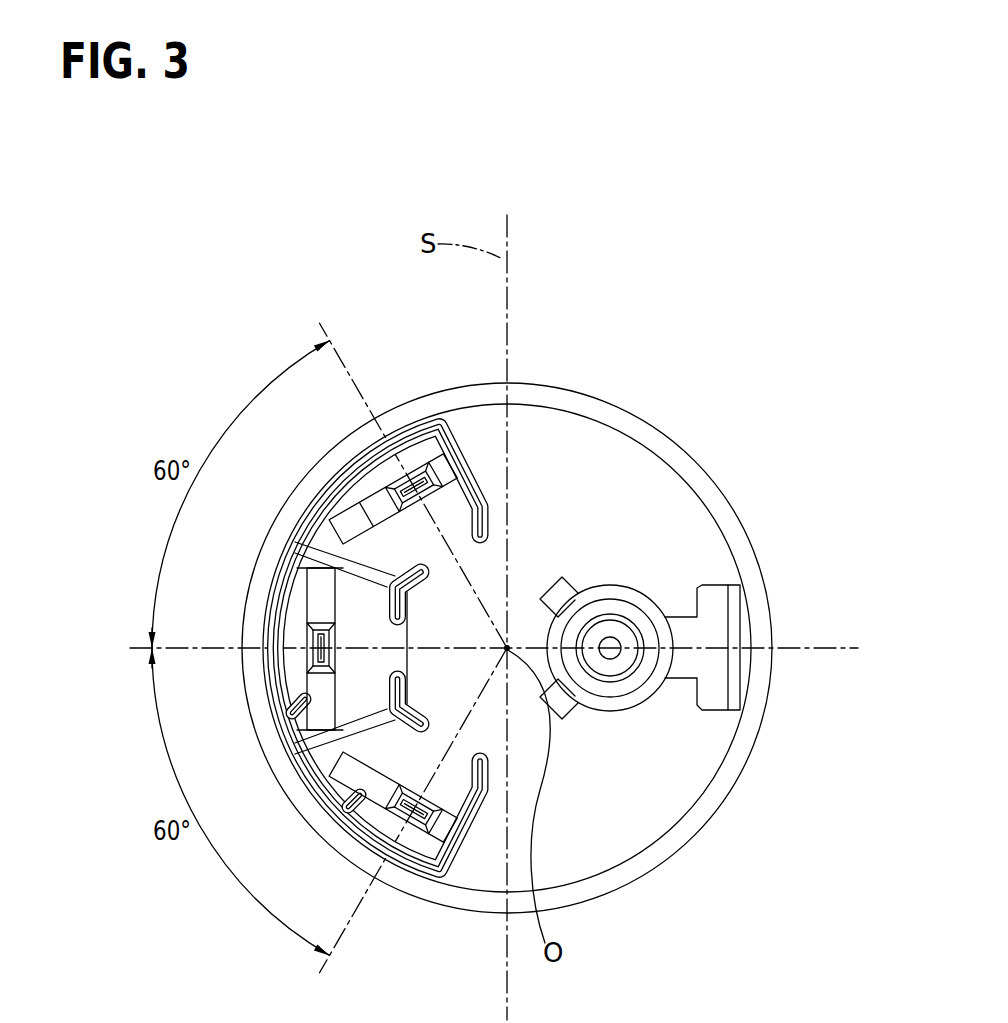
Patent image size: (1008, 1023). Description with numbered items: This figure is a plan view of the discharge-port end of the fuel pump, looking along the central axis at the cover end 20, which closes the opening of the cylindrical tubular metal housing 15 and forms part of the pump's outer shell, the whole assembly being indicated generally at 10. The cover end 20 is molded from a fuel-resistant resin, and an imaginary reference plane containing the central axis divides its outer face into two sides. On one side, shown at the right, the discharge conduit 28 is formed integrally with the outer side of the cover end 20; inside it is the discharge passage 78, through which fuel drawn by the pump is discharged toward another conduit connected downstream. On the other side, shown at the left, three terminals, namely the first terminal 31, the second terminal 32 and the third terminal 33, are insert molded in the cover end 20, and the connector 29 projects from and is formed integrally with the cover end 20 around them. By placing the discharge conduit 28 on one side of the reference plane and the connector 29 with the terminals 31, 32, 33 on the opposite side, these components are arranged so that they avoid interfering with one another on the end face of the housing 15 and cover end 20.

The fuel supply device 10 is at (734, 394).
The housing 15 is at (530, 383).
The cover end 20 is at (655, 505).
The discharge conduit 28 is at (632, 598).
The connector 29 is at (322, 492).
The first terminal 31 is at (421, 812).
The second terminal 32 is at (312, 658).
The third terminal 33 is at (420, 486).
The discharge passage 78 is at (616, 654).